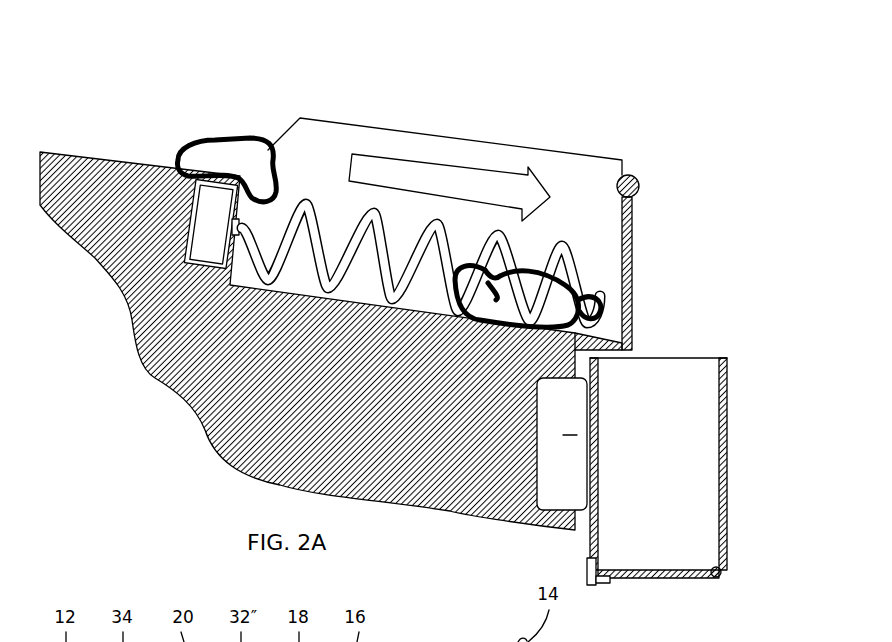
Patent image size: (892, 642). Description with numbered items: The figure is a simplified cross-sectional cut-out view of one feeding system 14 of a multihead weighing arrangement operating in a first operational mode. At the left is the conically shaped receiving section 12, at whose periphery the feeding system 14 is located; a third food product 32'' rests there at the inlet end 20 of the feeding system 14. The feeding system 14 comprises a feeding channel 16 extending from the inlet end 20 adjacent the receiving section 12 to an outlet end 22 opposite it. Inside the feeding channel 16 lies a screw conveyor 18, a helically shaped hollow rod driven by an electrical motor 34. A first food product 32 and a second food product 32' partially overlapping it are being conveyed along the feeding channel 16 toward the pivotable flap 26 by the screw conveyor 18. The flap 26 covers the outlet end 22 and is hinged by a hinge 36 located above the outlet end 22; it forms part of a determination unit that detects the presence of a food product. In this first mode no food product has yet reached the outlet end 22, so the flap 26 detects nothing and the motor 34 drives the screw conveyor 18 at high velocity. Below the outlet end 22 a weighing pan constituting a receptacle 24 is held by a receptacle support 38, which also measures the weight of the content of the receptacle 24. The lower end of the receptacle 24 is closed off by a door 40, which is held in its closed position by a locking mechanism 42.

The receiving section 12 is at (68, 140).
The feeding system 14 is at (488, 115).
The feeding channel 16 is at (320, 165).
The screw conveyor 18 is at (337, 233).
The inlet end 20 is at (272, 152).
The outlet end 22 is at (611, 337).
The receptacle 24 is at (733, 421).
The flap 26 is at (634, 312).
The first food product 32 is at (628, 271).
The second food product 32' is at (713, 135).
The third food product 32'' is at (223, 120).
The electrical motor 34 is at (212, 222).
The hinge 36 is at (641, 188).
The receptacle support 38 is at (577, 435).
The door 40 is at (667, 577).
The locking mechanism 42 is at (610, 578).